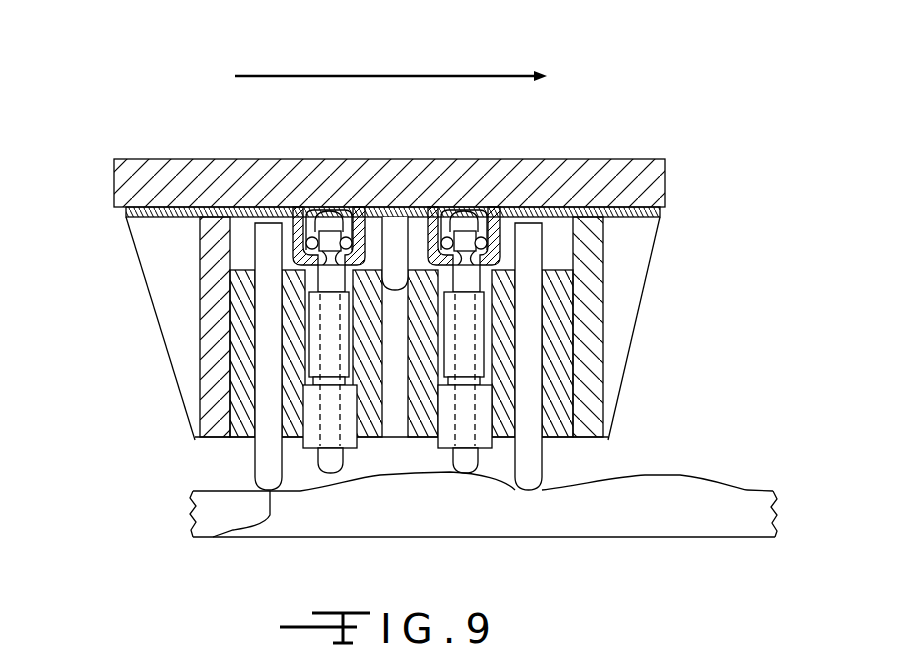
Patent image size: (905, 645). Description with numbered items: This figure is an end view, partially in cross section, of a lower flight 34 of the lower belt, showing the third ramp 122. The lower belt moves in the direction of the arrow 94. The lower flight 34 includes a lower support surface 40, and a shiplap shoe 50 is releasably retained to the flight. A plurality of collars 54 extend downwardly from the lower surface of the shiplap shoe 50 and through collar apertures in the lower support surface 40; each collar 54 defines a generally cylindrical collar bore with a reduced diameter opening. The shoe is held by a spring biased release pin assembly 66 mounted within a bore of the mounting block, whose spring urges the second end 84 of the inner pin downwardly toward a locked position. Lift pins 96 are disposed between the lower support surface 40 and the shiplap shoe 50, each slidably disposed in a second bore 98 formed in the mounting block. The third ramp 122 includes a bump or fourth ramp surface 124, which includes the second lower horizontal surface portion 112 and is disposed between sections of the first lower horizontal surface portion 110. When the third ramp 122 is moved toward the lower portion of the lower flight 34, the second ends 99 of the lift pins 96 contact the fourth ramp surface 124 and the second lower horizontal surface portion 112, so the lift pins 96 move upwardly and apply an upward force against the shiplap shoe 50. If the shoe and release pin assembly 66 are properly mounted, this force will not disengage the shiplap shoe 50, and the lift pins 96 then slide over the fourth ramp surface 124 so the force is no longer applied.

The lower flight 34 is at (198, 113).
The arrow 94 is at (490, 75).
The lower support surface 40 is at (165, 212).
The shiplap shoe 50 is at (600, 158).
The release pin assembly 66 is at (358, 272).
The collar 54 is at (503, 237).
The lift pin 96 is at (528, 253).
The second bore 98 is at (548, 305).
The second end 99 is at (213, 537).
The second end 84 is at (318, 479).
The second lower horizontal surface portion 112 is at (415, 477).
The fourth ramp surface 124 is at (425, 483).
The third ramp 122 is at (163, 510).
The first lower horizontal surface portion 110 is at (753, 487).